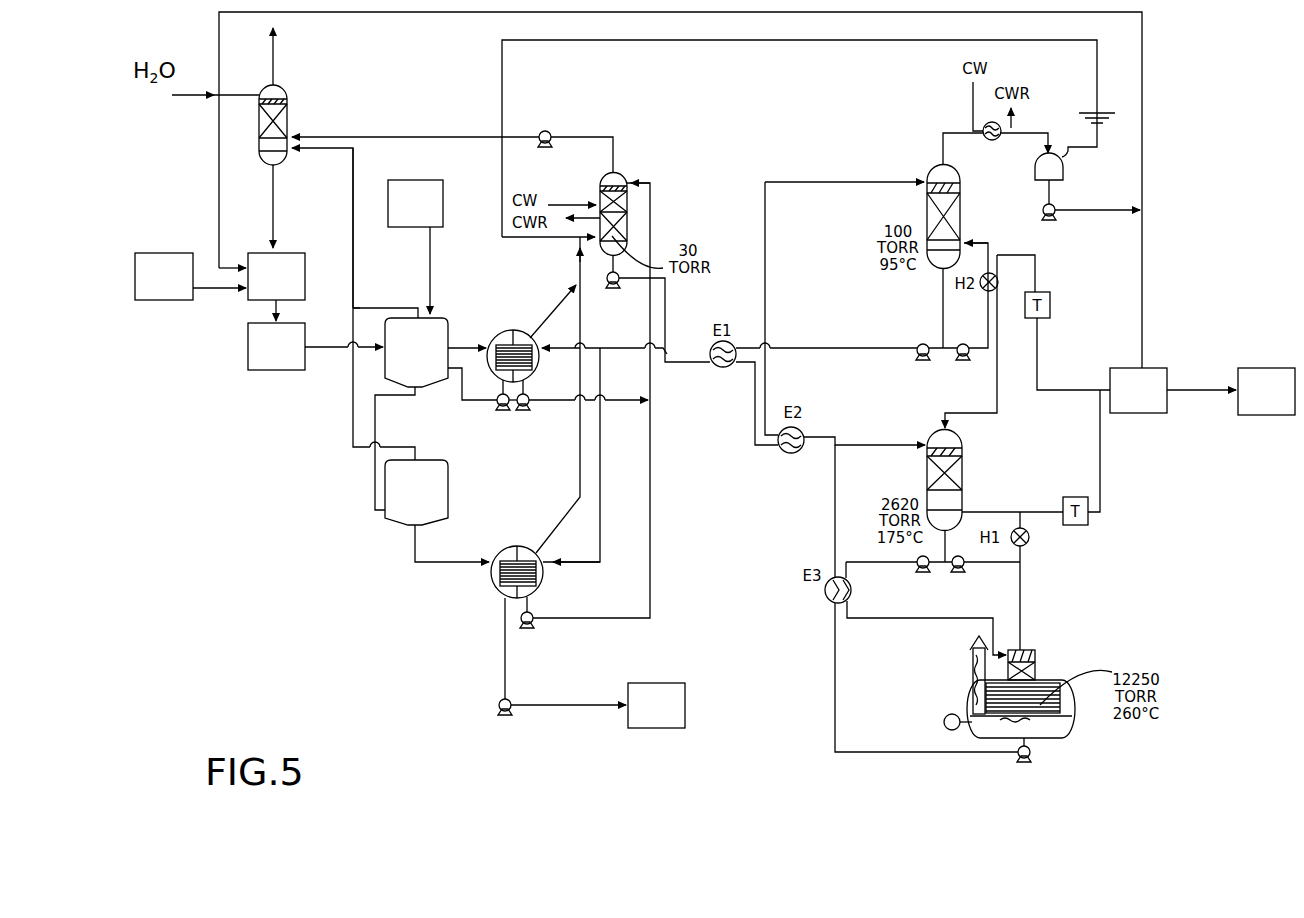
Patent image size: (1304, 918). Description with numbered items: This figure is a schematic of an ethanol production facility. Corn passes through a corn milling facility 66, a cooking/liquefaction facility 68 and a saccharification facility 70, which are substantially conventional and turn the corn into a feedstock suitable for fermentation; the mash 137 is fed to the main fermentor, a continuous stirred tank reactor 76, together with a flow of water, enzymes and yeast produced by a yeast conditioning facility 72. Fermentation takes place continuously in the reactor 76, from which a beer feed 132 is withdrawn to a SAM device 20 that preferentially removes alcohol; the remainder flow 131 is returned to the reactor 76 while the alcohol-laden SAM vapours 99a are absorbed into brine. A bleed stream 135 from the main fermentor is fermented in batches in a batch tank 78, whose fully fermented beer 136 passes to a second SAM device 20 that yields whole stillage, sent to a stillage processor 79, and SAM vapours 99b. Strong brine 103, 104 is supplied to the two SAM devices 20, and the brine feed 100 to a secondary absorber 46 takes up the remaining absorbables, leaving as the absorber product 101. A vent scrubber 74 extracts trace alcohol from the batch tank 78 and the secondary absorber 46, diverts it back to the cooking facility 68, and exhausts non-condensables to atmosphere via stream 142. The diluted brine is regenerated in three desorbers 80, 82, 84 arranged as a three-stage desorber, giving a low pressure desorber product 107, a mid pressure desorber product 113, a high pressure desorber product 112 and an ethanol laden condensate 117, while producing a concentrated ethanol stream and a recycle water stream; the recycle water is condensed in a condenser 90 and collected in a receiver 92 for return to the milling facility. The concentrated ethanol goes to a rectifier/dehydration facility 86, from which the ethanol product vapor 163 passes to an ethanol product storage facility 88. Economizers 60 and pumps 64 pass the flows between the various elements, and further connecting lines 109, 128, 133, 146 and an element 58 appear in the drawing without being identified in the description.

The SAM device 20 is at (517, 322).
The secondary absorber 46 is at (645, 152).
The valve 58 is at (546, 122).
The economizer 60 is at (724, 320).
The pump 64 is at (613, 294).
The corn milling facility 66 is at (160, 244).
The cooking/liquefaction facility 68 is at (290, 244).
The saccharification facility 70 is at (236, 341).
The yeast conditioning facility 72 is at (412, 172).
The vent scrubber 74 is at (285, 78).
The continuous stirred tank reactor 76 is at (444, 315).
The batch tank 78 is at (452, 495).
The stillage processor 79 is at (650, 672).
The desorber 80 is at (920, 156).
The desorber 82 is at (970, 455).
The desorber 84 is at (1055, 662).
The rectifier/dehydration facility 86 is at (1158, 344).
The ethanol product storage facility 88 is at (1262, 356).
The condenser 90 is at (992, 150).
The receiver 92 is at (1064, 182).
The SAM1 vapours 99a is at (493, 373).
The SAM2 vapours 99b is at (495, 590).
The feed to secondary absorber 100 is at (670, 218).
The product from secondary absorber 101 is at (664, 333).
The strong brine to SAM1 103 is at (560, 333).
The strong brine to SAM2 104 is at (591, 455).
The low pressure desorber product 107 is at (826, 333).
The stream 109 is at (864, 458).
The high pressure desorber product 112 is at (926, 693).
The mid pressure desorber product 113 is at (933, 579).
The ethanol laden condensate 117 is at (1012, 496).
The stream 128 is at (971, 341).
The remainder flow 131 is at (464, 386).
The beer feed to SAM1 132 is at (467, 332).
The stream 133 is at (403, 270).
The bleed stream 135 is at (395, 448).
The fully fermented beer 136 is at (434, 543).
The mash fed to main fermentor 137 is at (344, 331).
The vent stream 142 is at (248, 56).
The stream 146 is at (453, 139).
The ethanol product as vapor 163 is at (1201, 376).